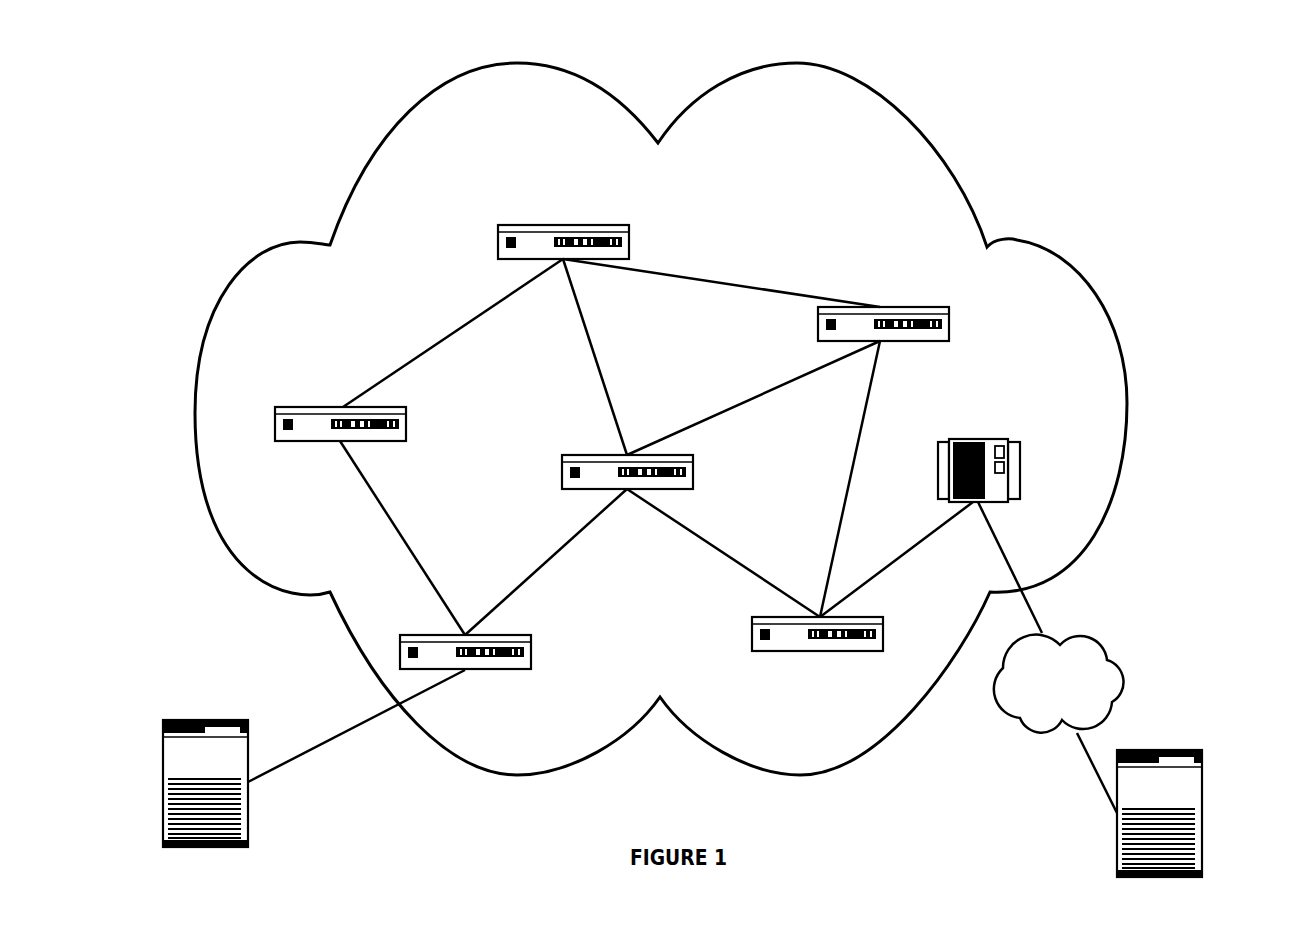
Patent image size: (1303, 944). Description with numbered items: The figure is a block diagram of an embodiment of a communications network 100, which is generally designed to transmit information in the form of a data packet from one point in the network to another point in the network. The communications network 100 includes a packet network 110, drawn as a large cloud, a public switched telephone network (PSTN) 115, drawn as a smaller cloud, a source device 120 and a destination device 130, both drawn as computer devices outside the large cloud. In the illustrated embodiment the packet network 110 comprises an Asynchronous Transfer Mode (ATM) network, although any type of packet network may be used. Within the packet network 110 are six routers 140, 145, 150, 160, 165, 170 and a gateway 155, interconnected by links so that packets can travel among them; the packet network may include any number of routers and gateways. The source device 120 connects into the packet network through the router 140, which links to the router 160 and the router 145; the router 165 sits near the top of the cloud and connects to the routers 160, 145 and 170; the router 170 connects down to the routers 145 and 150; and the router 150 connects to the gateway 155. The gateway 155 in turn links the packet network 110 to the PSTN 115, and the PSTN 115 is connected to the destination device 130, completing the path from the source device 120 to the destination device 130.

The communications network 100 is at (1083, 59).
The packet network 110 is at (818, 63).
The public switched telephone network (PSTN) 115 is at (1087, 631).
The source device 120 is at (243, 721).
The destination device 130 is at (1195, 753).
The router 140 is at (515, 633).
The router 145 is at (680, 453).
The router 150 is at (868, 616).
The gateway 155 is at (1010, 436).
The router 160 is at (392, 404).
The router 165 is at (613, 223).
The router 170 is at (935, 304).